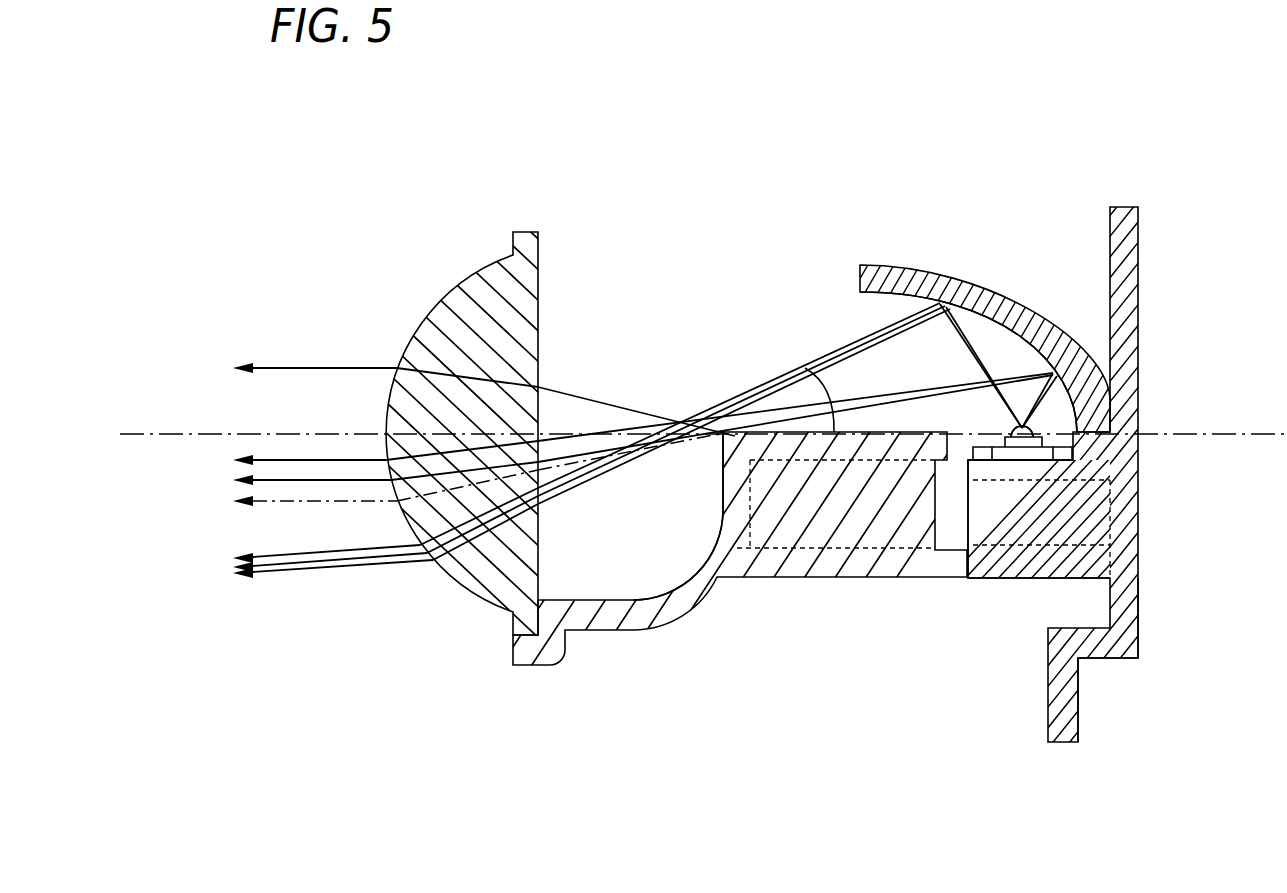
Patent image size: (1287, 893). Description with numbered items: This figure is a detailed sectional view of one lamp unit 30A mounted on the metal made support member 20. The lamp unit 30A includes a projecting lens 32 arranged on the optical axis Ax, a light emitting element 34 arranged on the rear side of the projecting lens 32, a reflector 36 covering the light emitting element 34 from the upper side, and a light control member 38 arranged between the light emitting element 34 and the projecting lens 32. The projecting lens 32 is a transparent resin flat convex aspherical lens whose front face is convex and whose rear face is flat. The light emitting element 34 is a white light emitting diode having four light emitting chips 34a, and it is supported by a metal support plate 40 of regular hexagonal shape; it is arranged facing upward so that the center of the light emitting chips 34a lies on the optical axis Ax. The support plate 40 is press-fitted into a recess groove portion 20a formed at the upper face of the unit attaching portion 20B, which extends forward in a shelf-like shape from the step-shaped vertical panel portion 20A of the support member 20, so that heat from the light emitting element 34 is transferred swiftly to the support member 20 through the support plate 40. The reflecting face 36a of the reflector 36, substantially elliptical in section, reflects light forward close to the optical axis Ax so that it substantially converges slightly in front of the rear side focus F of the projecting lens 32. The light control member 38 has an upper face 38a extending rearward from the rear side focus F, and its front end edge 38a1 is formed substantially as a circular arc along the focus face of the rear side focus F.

The optical axis Ax is at (208, 432).
The lamp unit 30A is at (612, 196).
The projecting lens 32 is at (446, 283).
The light control member 38 is at (780, 515).
The upper face 38a is at (808, 371).
The front end edge 38a1 is at (710, 441).
The rear side focus F is at (716, 428).
The reflector 36 is at (972, 271).
The reflecting face 36a is at (902, 296).
The light emitting element 34 is at (1054, 414).
The light emitting chips 34a is at (1005, 427).
The support plate 40 is at (1063, 450).
The metal made support member 20 is at (1170, 277).
The vertical panel portion 20A is at (1130, 604).
The unit attaching portion 20B is at (1030, 537).
The recess groove portion 20a is at (1000, 458).